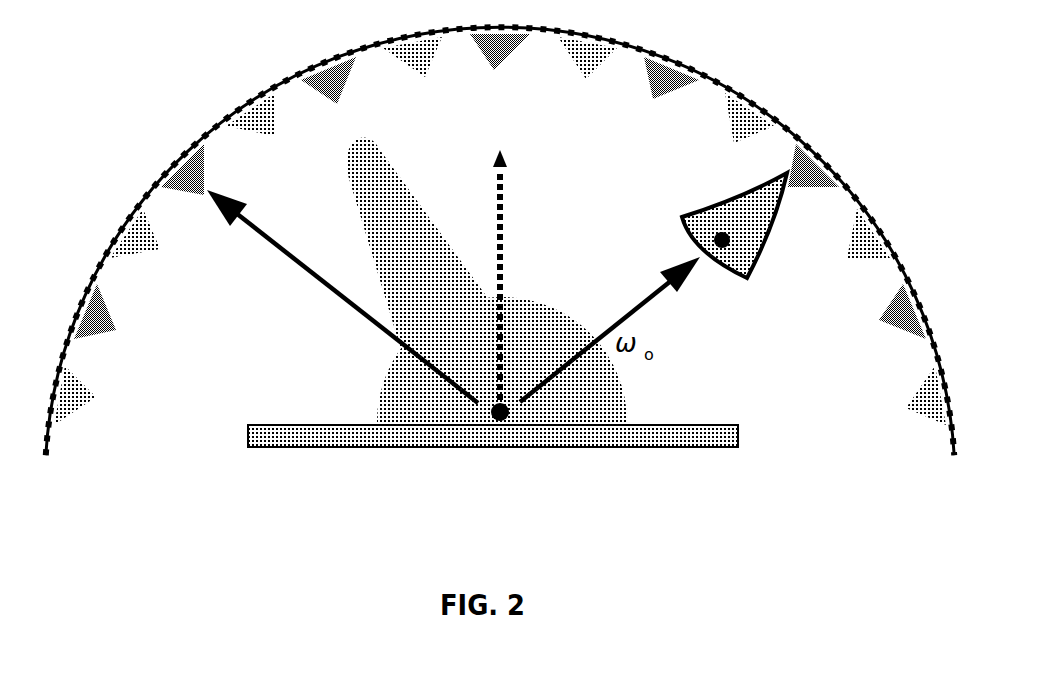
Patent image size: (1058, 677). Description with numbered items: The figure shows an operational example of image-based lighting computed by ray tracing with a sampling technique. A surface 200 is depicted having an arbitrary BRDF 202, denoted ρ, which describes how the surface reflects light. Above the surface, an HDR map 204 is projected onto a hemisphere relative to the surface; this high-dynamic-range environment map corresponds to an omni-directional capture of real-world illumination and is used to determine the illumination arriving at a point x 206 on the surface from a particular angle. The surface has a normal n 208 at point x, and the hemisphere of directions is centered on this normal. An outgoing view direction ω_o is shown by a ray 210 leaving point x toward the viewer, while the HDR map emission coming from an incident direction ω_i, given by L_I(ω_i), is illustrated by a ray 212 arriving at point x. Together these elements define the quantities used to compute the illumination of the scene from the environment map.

The surface 200 is at (698, 479).
The arbitrary BRDF 202 is at (400, 196).
The HDR map 204 is at (178, 120).
The point x 206 is at (495, 442).
The normal n 208 is at (548, 179).
The ray 210 is at (733, 329).
The ray 212 is at (350, 351).